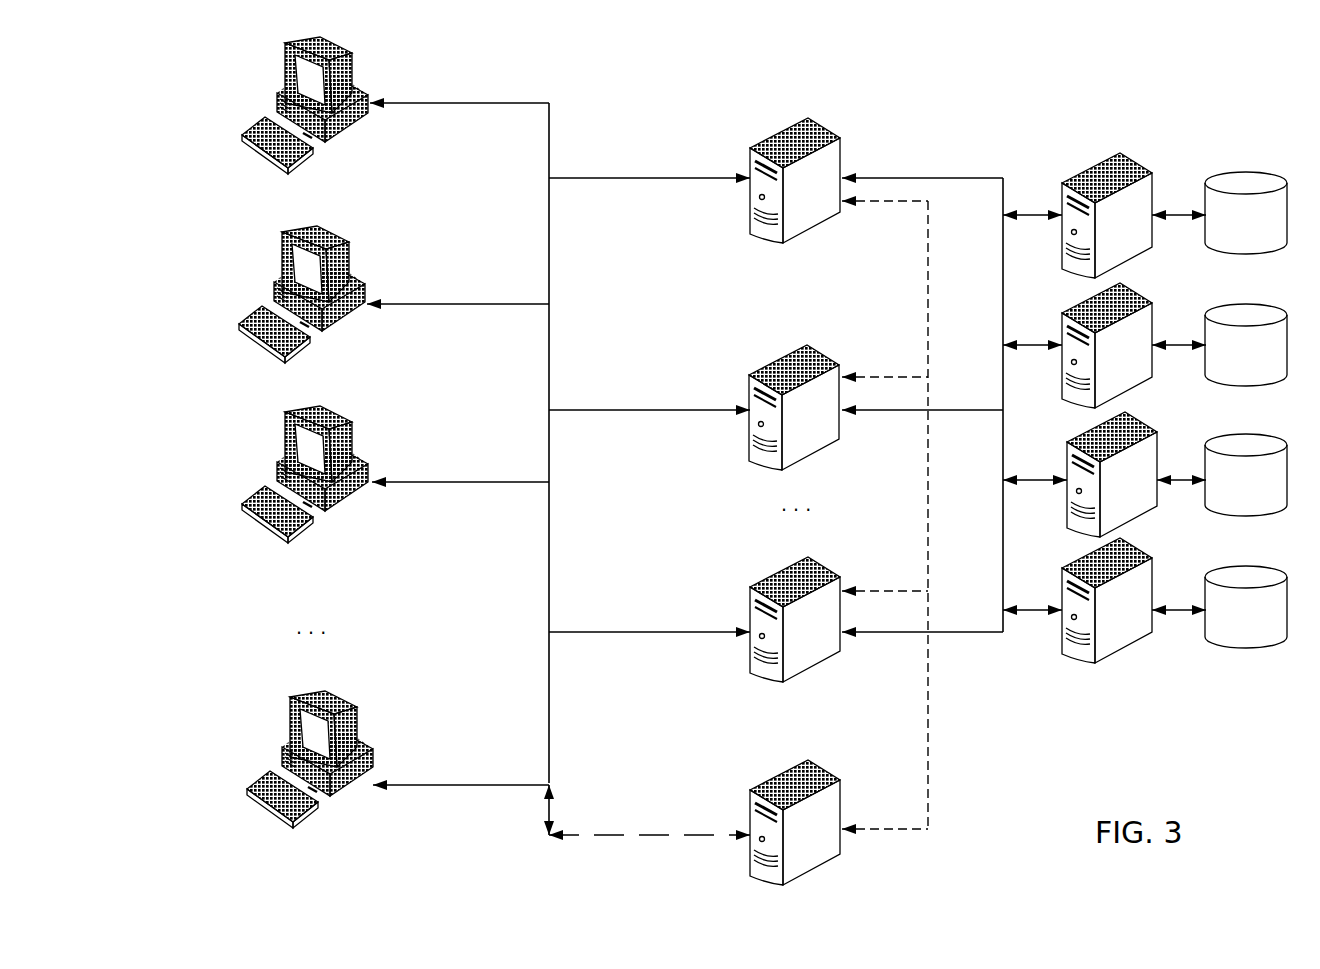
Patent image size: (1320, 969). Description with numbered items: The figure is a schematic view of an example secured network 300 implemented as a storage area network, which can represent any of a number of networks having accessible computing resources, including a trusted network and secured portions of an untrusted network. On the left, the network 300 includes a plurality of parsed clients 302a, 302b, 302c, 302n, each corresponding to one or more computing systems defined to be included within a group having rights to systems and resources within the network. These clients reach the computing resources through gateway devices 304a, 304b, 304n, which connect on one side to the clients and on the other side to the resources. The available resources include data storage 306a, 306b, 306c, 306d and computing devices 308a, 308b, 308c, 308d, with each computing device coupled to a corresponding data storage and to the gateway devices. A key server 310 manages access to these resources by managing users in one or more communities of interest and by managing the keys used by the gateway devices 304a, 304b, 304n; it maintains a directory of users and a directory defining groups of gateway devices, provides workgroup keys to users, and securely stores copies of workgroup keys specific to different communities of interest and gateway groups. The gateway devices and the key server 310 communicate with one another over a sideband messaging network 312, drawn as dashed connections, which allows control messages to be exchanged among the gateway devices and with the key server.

The secured network 300 is at (168, 805).
The parsed client 302a is at (278, 85).
The parsed client 302b is at (276, 275).
The parsed client 302c is at (279, 458).
The parsed client 302n is at (283, 746).
The gateway device 304a is at (807, 118).
The gateway device 304b is at (807, 345).
The gateway device 304n is at (806, 557).
The data storage 306a is at (1270, 233).
The data storage 306b is at (1270, 359).
The data storage 306c is at (1270, 490).
The data storage 306d is at (1270, 618).
The computing device 308a is at (1178, 174).
The computing device 308b is at (1175, 299).
The computing device 308c is at (1185, 426).
The computing device 308d is at (1178, 565).
The key server 310 is at (840, 822).
The sideband messaging network 312 is at (928, 250).